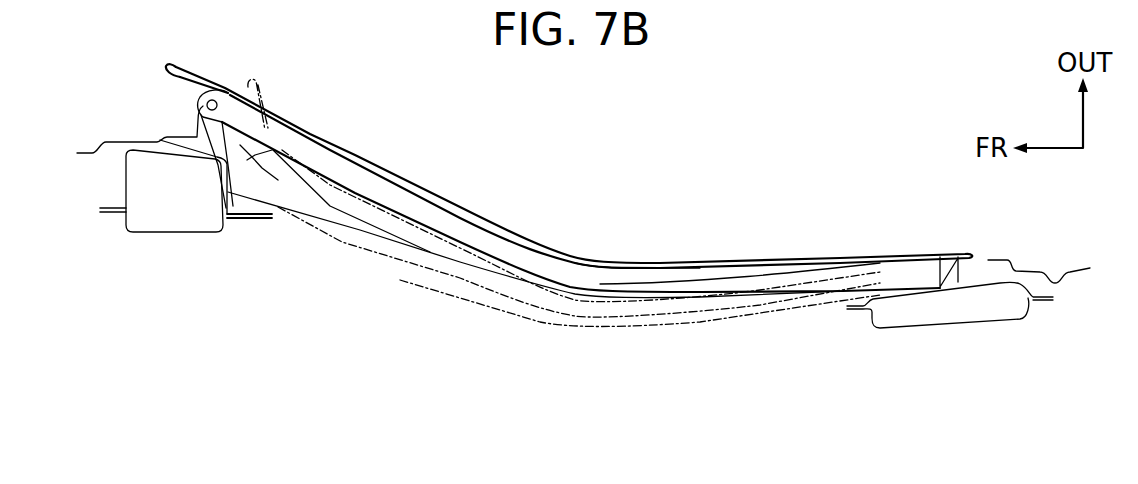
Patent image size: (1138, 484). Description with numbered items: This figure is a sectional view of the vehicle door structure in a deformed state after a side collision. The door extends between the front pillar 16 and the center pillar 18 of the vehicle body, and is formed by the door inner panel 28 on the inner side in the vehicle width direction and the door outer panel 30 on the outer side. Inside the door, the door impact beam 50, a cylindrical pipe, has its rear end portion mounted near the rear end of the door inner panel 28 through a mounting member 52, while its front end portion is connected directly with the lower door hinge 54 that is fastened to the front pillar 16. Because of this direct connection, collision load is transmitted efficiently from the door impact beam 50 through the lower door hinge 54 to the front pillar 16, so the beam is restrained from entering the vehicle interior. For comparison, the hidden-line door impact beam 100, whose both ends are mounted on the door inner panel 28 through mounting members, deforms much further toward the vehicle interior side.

The front pillar 16 is at (172, 235).
The center pillar 18 is at (960, 325).
The door inner panel 28 is at (355, 235).
The door outer panel 30 is at (445, 199).
The door impact beam 50 is at (622, 264).
The mounting member 52 is at (858, 290).
The lower door hinge 54 is at (167, 136).
The door impact beam 100 is at (590, 314).